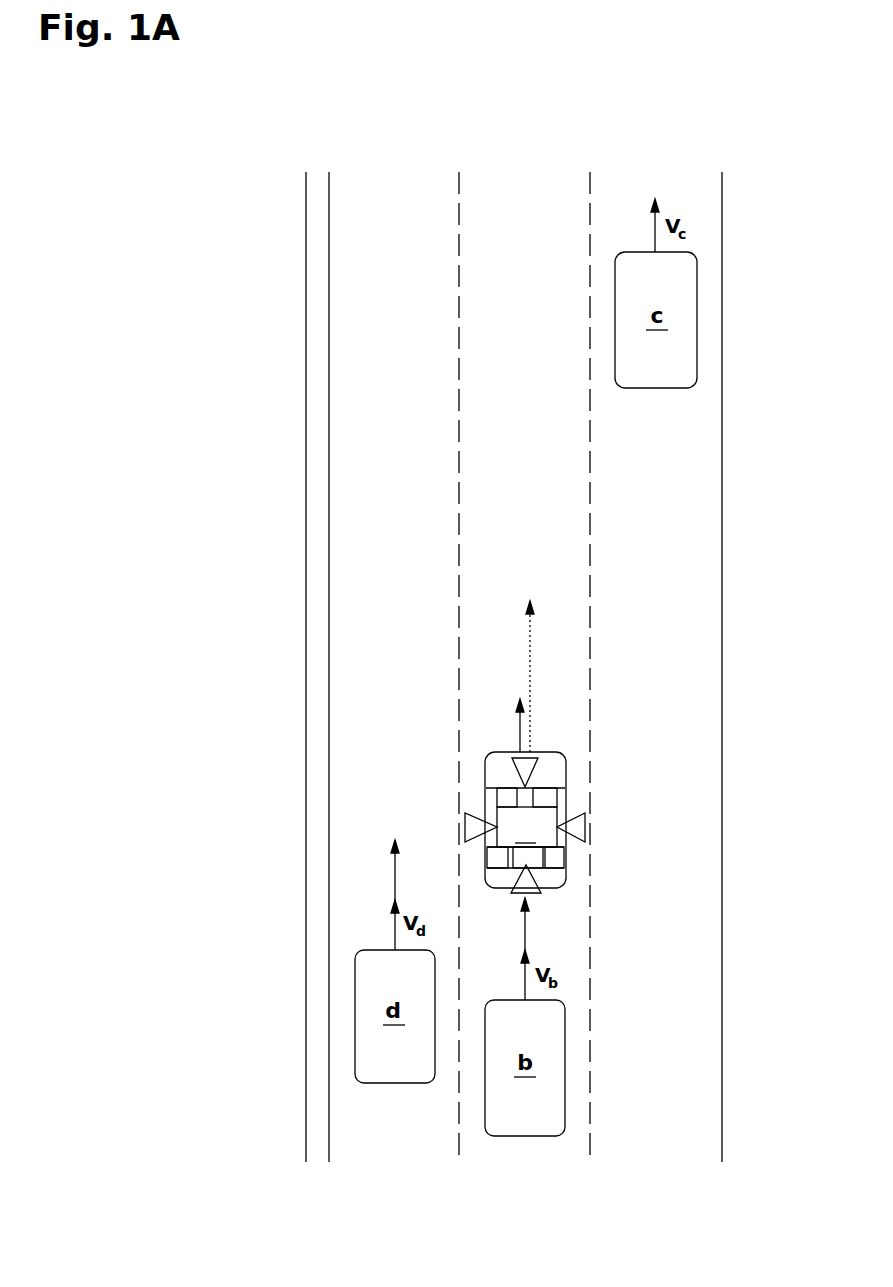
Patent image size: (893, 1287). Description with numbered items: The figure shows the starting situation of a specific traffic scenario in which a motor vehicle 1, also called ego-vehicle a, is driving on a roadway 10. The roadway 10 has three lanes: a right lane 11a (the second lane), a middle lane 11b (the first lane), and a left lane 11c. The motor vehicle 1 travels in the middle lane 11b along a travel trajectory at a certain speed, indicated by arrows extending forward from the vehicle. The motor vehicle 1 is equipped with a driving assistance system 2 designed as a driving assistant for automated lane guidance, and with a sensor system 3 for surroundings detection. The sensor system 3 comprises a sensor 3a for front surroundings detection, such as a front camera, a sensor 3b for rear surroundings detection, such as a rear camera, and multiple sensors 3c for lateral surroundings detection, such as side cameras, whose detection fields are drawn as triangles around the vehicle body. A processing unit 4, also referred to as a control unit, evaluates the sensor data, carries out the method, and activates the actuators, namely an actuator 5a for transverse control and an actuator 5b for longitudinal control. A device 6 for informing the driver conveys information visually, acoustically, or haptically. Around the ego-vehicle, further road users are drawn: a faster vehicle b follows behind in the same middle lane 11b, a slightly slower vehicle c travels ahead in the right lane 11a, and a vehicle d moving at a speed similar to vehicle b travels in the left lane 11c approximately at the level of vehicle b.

The roadway 10 is at (200, 250).
The right lane 11a is at (653, 487).
The middle lane 11b is at (503, 403).
The left lane 11c is at (362, 320).
The motor vehicle 1 is at (575, 790).
The driving assistance system 2 is at (528, 769).
The sensor system 3 is at (427, 802).
The sensor for front surroundings detection 3a is at (547, 792).
The sensor for rear surroundings detection 3b is at (541, 893).
The sensors for lateral surroundings detection 3c is at (464, 815).
The processing unit 4 is at (500, 860).
The actuator for transverse control 5a is at (528, 860).
The actuator for longitudinal control 5b is at (566, 858).
The device for informing the driver 6 is at (502, 793).